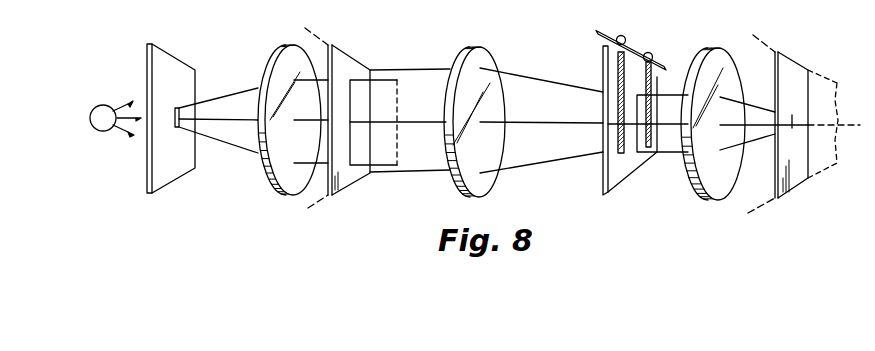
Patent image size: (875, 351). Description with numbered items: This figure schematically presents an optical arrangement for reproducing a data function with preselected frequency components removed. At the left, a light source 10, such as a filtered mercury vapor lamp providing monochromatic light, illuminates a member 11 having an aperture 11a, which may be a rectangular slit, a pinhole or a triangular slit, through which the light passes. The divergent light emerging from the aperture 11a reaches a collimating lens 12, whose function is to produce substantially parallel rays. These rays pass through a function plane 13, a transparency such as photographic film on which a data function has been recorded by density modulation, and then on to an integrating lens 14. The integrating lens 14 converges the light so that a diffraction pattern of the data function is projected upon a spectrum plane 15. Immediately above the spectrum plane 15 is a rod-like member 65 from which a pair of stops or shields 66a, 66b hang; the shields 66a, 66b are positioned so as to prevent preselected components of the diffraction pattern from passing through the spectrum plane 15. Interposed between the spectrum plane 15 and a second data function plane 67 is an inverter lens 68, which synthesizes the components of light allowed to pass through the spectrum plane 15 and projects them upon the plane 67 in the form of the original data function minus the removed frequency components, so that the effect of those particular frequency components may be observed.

The light source 10 is at (94, 109).
The member 11 is at (145, 168).
The aperture 11a is at (171, 122).
The collimating lens 12 is at (261, 167).
The function plane 13 is at (355, 60).
The integrating lens 14 is at (490, 53).
The spectrum plane 15 is at (602, 73).
The rod-like member 65 is at (630, 46).
The stop or shield 66a is at (616, 153).
The stop or shield 66b is at (645, 148).
The second data function plane 67 is at (798, 62).
The inverter lens 68 is at (728, 47).